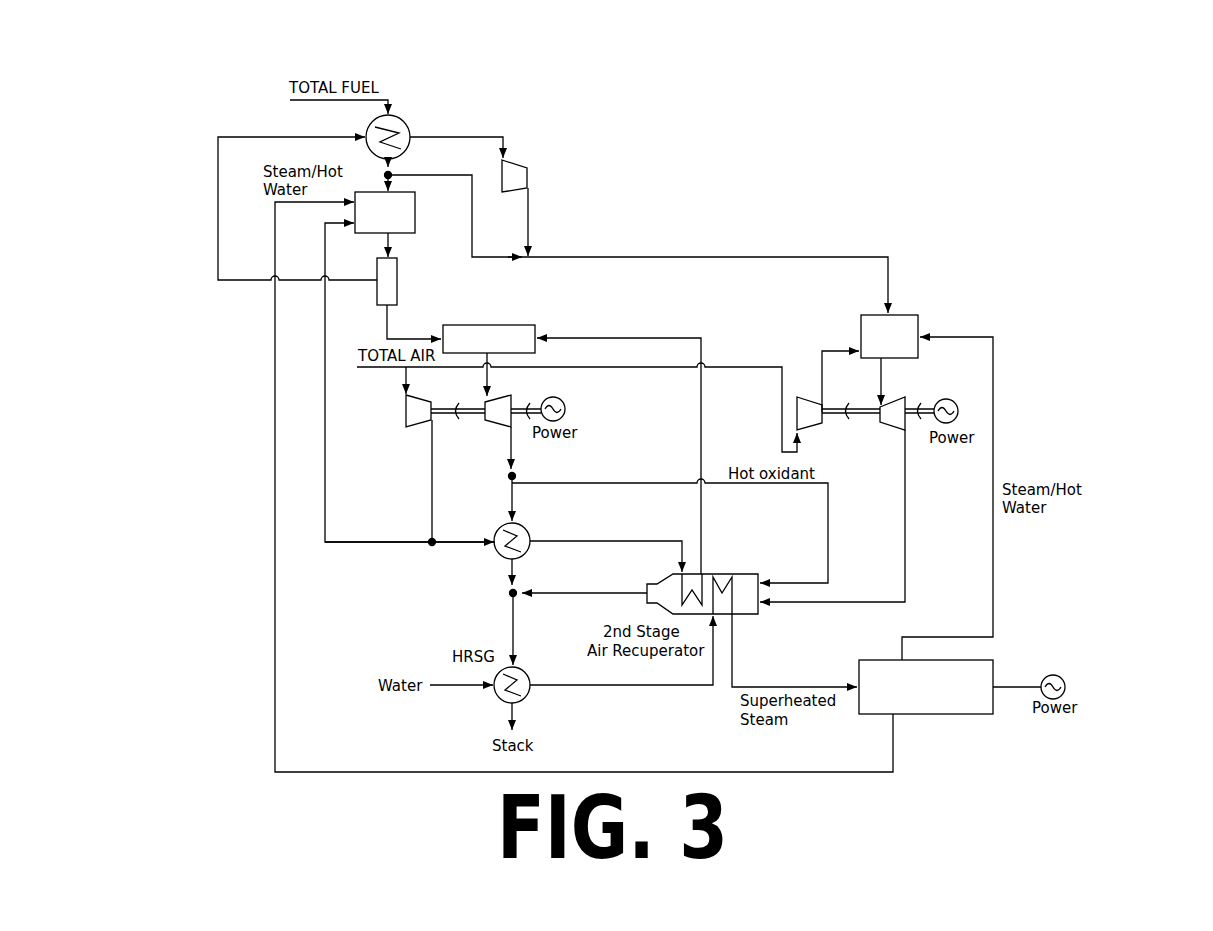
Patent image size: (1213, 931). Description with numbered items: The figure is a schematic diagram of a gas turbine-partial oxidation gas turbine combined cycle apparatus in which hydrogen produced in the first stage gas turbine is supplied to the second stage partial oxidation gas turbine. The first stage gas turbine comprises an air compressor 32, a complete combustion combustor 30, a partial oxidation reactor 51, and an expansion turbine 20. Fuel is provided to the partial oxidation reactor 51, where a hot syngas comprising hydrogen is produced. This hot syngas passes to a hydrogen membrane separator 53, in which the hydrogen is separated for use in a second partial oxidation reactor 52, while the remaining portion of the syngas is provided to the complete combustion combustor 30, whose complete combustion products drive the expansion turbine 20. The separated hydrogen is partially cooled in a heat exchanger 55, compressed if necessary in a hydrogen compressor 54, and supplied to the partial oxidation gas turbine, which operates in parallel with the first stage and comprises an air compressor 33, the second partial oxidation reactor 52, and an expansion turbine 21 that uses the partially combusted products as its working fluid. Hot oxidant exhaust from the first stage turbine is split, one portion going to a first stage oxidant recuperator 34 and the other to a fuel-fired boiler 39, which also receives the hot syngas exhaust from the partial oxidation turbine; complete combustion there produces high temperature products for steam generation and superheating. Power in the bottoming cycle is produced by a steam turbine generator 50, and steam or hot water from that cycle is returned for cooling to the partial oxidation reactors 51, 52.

The expansion turbine 20 is at (498, 427).
The expansion turbine 21 is at (905, 400).
The complete combustion combustor 30 is at (523, 324).
The air compressor 32 is at (405, 416).
The air compressor 33 is at (810, 397).
The first stage oxidant recuperator 34 is at (492, 560).
The fuel-fired boiler 39 is at (760, 613).
The steam turbine generator 50 is at (958, 714).
The partial oxidation reactor 51 is at (363, 236).
The second partial oxidation reactor 52 is at (913, 314).
The hydrogen membrane separator 53 is at (377, 300).
The hydrogen compressor 54 is at (504, 160).
The heat exchanger 55 is at (398, 117).